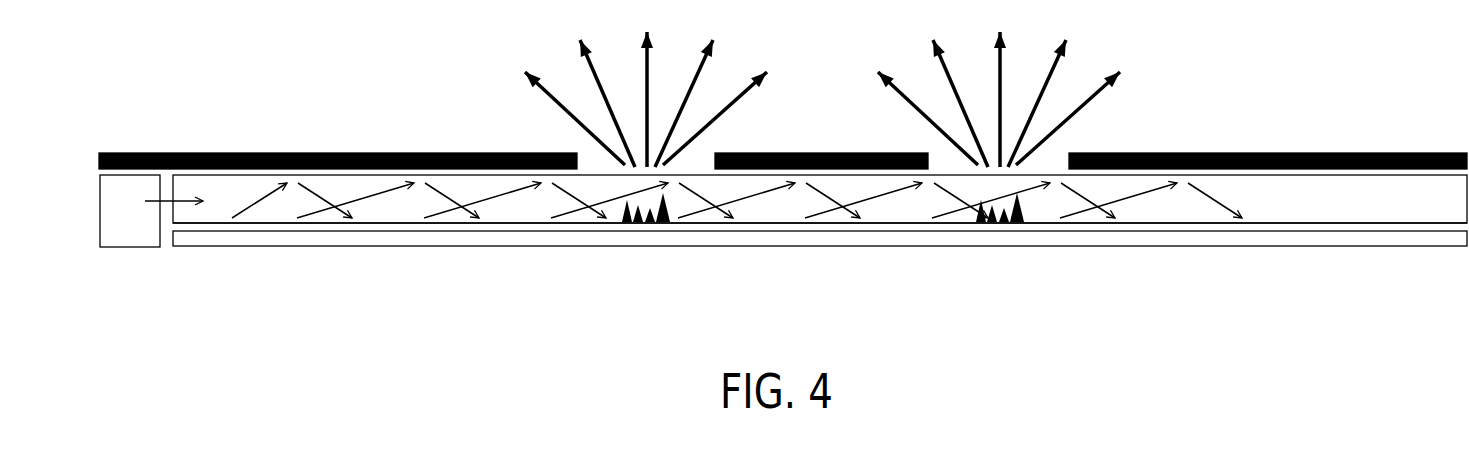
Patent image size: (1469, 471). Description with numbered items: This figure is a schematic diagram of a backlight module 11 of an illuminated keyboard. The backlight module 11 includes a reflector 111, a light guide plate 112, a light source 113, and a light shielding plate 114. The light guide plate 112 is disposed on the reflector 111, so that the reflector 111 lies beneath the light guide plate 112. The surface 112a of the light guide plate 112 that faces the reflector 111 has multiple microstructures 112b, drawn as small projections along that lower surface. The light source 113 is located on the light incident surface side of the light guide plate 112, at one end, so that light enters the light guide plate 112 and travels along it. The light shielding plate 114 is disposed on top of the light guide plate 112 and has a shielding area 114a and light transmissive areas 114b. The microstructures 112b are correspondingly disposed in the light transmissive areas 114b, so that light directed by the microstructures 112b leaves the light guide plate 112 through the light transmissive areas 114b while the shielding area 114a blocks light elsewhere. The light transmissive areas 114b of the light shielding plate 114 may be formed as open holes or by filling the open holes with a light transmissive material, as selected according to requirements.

The backlight module 11 is at (227, 118).
The reflector 111 is at (468, 238).
The light guide plate 112 is at (293, 210).
The surface 112a is at (355, 224).
The microstructures 112b is at (672, 213).
The light source 113 is at (132, 233).
The light shielding plate 114 is at (503, 90).
The shielding area 114a is at (355, 152).
The light transmissive areas 114b is at (592, 158).